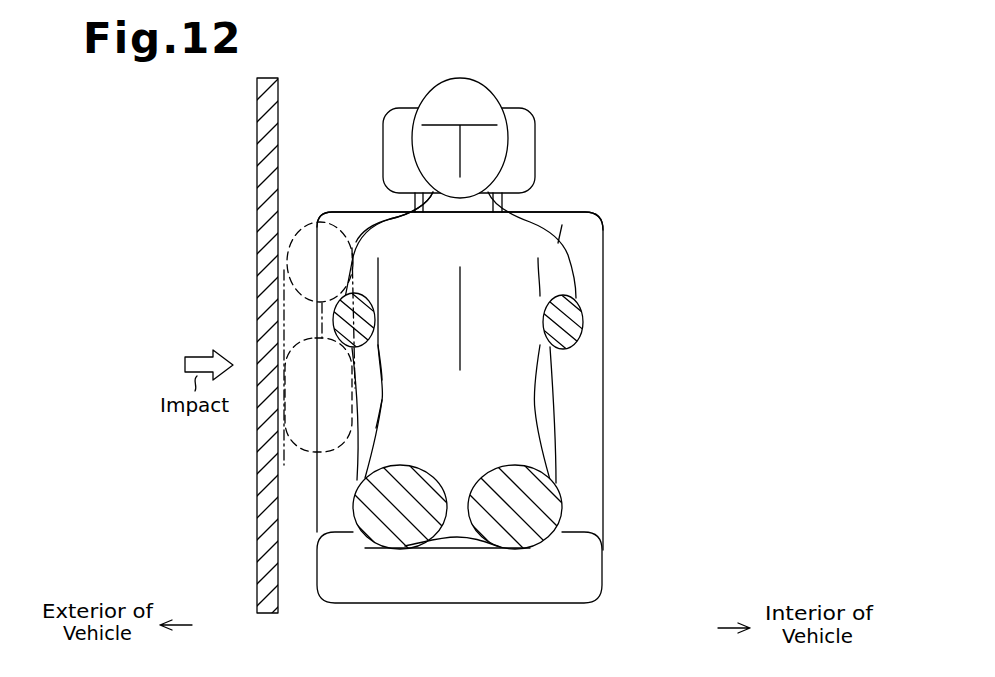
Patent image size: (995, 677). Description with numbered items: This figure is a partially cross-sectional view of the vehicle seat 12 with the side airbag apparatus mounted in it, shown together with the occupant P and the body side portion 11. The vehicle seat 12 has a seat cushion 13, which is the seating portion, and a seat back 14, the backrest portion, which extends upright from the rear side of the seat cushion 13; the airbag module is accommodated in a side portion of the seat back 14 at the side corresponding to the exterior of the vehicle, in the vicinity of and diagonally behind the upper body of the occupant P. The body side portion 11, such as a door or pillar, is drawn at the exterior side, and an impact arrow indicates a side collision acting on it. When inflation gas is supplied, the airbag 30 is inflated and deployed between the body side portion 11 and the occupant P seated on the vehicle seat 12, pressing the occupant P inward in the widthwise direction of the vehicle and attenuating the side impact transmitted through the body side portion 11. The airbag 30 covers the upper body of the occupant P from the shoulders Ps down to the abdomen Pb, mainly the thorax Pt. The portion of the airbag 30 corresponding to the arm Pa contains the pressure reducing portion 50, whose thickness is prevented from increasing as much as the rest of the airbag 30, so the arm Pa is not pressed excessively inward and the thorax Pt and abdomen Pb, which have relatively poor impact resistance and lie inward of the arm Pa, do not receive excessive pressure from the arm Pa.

The occupant P is at (494, 87).
The shoulders Ps is at (390, 228).
The arm Pa is at (374, 316).
The thorax Pt is at (393, 362).
The abdomen Pb is at (396, 410).
The body side portion 11 is at (262, 520).
The vehicle seat 12 is at (603, 383).
The seat back 14 is at (460, 221).
The seat cushion 13 is at (590, 560).
The airbag 30 is at (301, 222).
The pressure reducing portion 50 is at (292, 324).